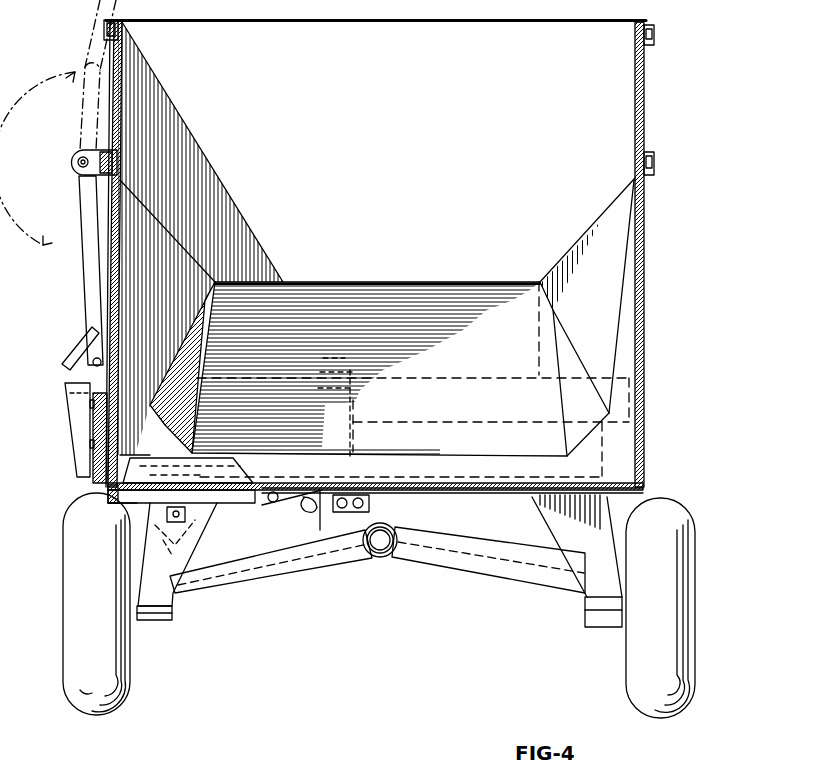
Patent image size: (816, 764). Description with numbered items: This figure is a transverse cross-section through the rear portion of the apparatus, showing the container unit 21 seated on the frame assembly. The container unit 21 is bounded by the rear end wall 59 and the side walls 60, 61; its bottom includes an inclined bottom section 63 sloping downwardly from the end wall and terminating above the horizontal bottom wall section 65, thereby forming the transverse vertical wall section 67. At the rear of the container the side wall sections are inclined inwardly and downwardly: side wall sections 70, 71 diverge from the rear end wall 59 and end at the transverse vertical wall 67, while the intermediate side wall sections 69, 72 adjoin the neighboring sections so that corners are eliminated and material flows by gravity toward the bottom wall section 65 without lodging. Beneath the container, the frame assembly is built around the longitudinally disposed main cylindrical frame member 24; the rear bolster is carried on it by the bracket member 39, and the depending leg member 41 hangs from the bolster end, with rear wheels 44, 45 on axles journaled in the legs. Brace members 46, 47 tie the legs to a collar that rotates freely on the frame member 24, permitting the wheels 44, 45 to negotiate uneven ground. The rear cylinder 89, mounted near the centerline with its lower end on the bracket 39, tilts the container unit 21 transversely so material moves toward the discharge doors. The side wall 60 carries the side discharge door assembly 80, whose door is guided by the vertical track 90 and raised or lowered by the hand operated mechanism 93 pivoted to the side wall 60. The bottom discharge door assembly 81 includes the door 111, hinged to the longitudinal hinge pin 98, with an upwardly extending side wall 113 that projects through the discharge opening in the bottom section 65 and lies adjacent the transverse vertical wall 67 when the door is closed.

The container unit 21 is at (648, 258).
The main cylindrical frame member 24 is at (378, 558).
The bracket member 39 is at (403, 493).
The leg member 41 is at (178, 577).
The rear wheel 44 is at (624, 660).
The rear wheel 45 is at (132, 660).
The brace member 46 is at (472, 550).
The brace member 47 is at (285, 568).
The rear end wall 59 is at (458, 133).
The side wall 60 is at (122, 128).
The side wall 61 is at (647, 310).
The bottom section 63 is at (466, 414).
The horizontal bottom wall section 65 is at (468, 495).
The transverse vertical wall section 67 is at (476, 480).
The intermediate side wall section 69 is at (606, 295).
The side wall section 70 is at (594, 412).
The side wall section 71 is at (190, 399).
The intermediate side wall section 72 is at (179, 310).
The side discharge door assembly 80 is at (104, 378).
The bottom discharge door assembly 81 is at (192, 508).
The rear cylinder 89 is at (352, 410).
The vertical track 90 is at (64, 434).
The hand operated mechanism 93 is at (76, 197).
The hinge pin 98 is at (112, 506).
The door 111 is at (258, 485).
The side wall 113 is at (222, 456).